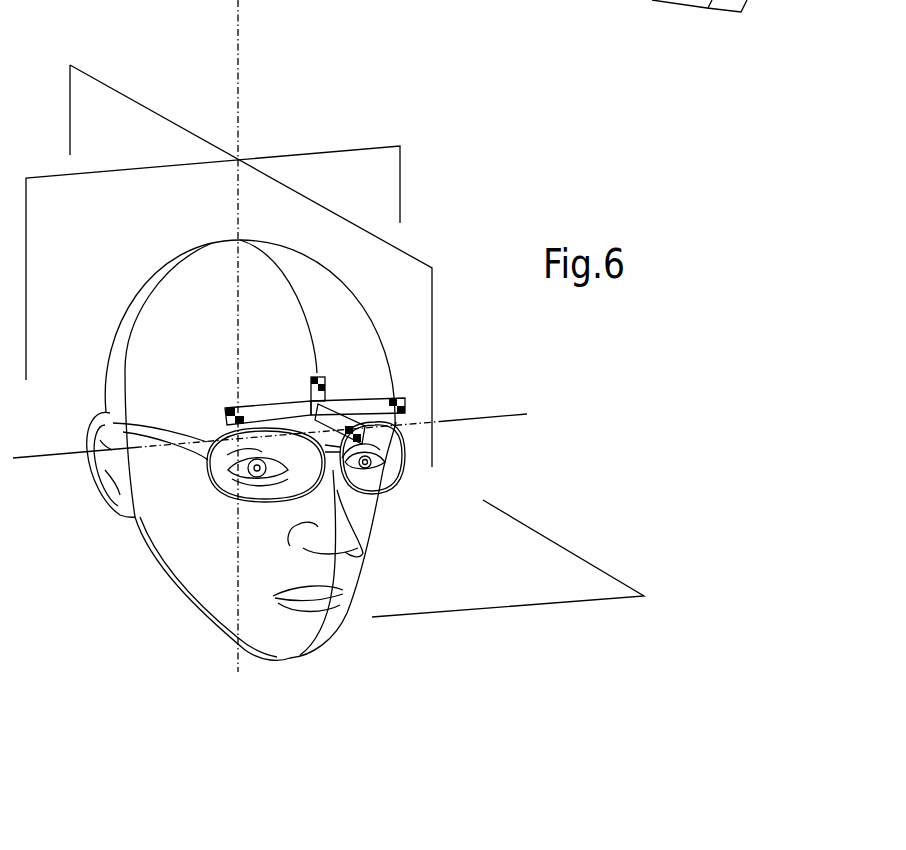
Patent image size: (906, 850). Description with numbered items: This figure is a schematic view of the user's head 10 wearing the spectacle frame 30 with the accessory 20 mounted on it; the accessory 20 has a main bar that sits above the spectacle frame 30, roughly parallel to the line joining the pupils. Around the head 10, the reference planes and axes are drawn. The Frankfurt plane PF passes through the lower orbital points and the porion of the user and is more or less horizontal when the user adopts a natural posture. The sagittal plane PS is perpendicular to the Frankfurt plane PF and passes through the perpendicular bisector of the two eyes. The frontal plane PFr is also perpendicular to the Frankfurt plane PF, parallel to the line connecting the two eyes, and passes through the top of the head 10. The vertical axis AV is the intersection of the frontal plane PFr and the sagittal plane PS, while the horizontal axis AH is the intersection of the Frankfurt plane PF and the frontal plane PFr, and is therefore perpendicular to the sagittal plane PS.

The head 10 is at (213, 595).
The accessory 20 is at (288, 410).
The spectacle frame 30 is at (197, 470).
The vertical axis AV is at (239, 51).
The horizontal axis AH is at (478, 418).
The sagittal plane PS is at (125, 115).
The frontal plane PFr is at (387, 180).
The Frankfurt plane PF is at (585, 583).